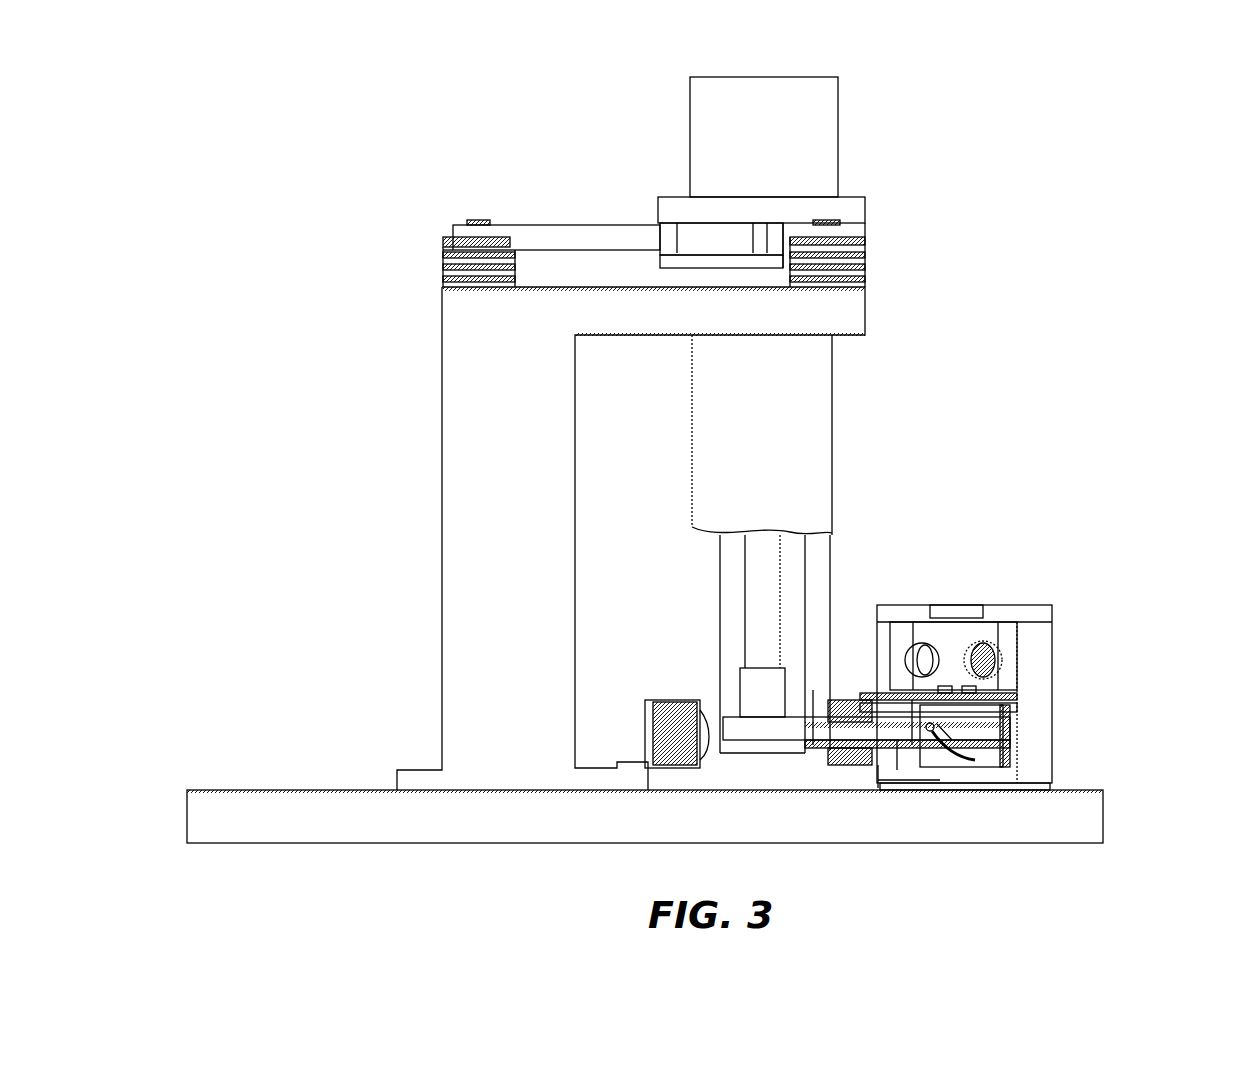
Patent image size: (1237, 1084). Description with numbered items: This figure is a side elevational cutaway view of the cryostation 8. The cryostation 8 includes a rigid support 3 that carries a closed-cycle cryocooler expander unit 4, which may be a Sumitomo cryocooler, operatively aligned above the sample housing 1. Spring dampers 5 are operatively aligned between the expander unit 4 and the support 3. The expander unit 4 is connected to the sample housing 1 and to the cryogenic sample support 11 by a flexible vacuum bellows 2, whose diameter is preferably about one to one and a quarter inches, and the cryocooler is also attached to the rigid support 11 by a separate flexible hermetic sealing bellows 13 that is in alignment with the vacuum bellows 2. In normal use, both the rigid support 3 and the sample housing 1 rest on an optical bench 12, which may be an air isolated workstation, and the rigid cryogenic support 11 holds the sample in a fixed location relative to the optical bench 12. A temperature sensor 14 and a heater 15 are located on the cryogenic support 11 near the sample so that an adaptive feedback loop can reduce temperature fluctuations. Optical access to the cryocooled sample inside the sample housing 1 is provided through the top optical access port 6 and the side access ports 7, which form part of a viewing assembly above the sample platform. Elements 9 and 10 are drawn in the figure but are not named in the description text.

The sample housing 1 is at (1056, 640).
The bellows 2 is at (854, 692).
The support 3 is at (874, 312).
The closed-cycle cryocooler expander unit 4 is at (846, 137).
The spring dampers 5 is at (873, 257).
The top optical access port 6 is at (956, 597).
The side access ports 7 is at (1012, 657).
The cryostation 8 is at (272, 168).
The lever 9 is at (964, 753).
The spacer plate 10 is at (960, 790).
The cryogenic sample support 11 is at (1010, 720).
The optical bench 12 is at (1110, 812).
The flexible hermetic sealing bellows 13 is at (673, 692).
The temperature sensor 14 is at (970, 680).
The heater 15 is at (949, 680).